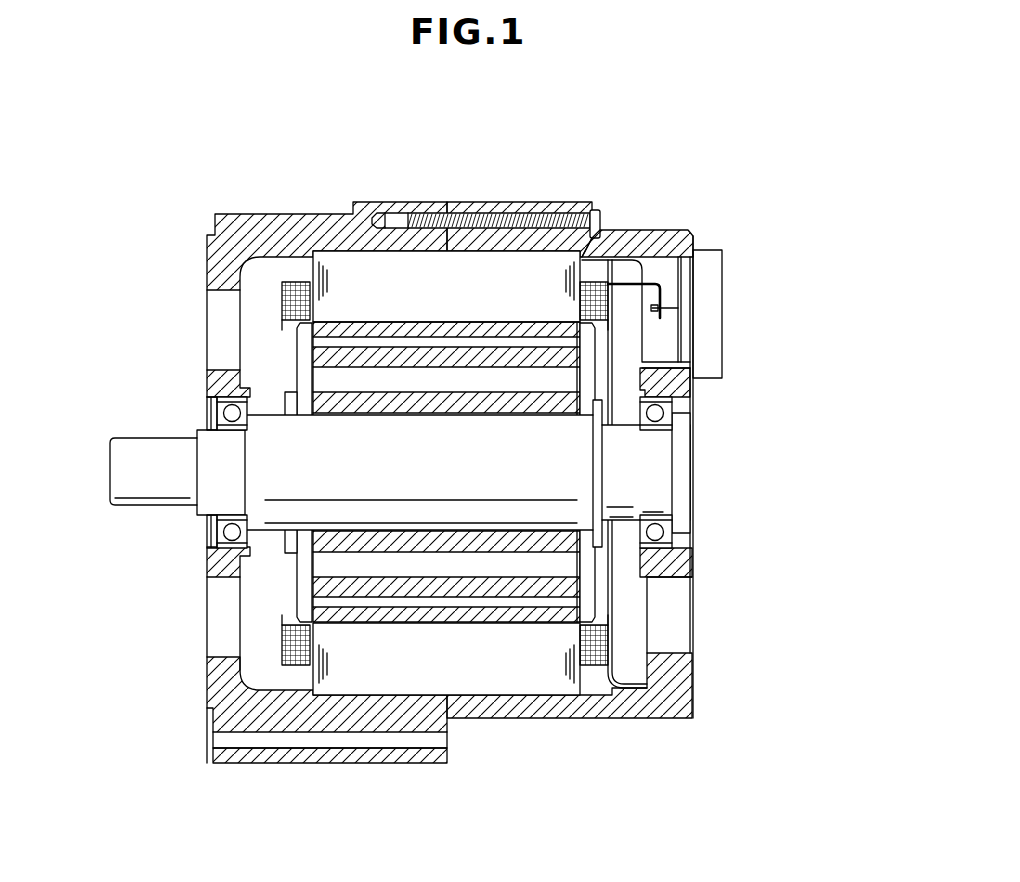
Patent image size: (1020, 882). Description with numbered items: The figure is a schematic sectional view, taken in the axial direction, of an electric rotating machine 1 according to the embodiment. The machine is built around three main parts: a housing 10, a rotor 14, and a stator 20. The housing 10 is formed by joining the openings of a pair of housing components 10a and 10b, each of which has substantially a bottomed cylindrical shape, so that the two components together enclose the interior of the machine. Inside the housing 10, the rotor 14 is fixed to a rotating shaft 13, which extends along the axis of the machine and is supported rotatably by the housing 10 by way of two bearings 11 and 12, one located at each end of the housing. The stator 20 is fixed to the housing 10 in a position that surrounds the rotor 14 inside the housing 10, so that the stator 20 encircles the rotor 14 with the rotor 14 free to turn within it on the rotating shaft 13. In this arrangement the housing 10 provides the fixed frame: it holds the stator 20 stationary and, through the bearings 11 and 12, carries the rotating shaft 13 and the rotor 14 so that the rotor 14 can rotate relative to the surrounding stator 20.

The electric rotating machine 1 is at (753, 150).
The housing 10 is at (502, 91).
The housing component 10a is at (370, 211).
The housing component 10b is at (468, 211).
The bearing 11 is at (226, 402).
The bearing 12 is at (668, 401).
The rotating shaft 13 is at (157, 490).
The rotor 14 is at (568, 354).
The stator 20 is at (557, 282).